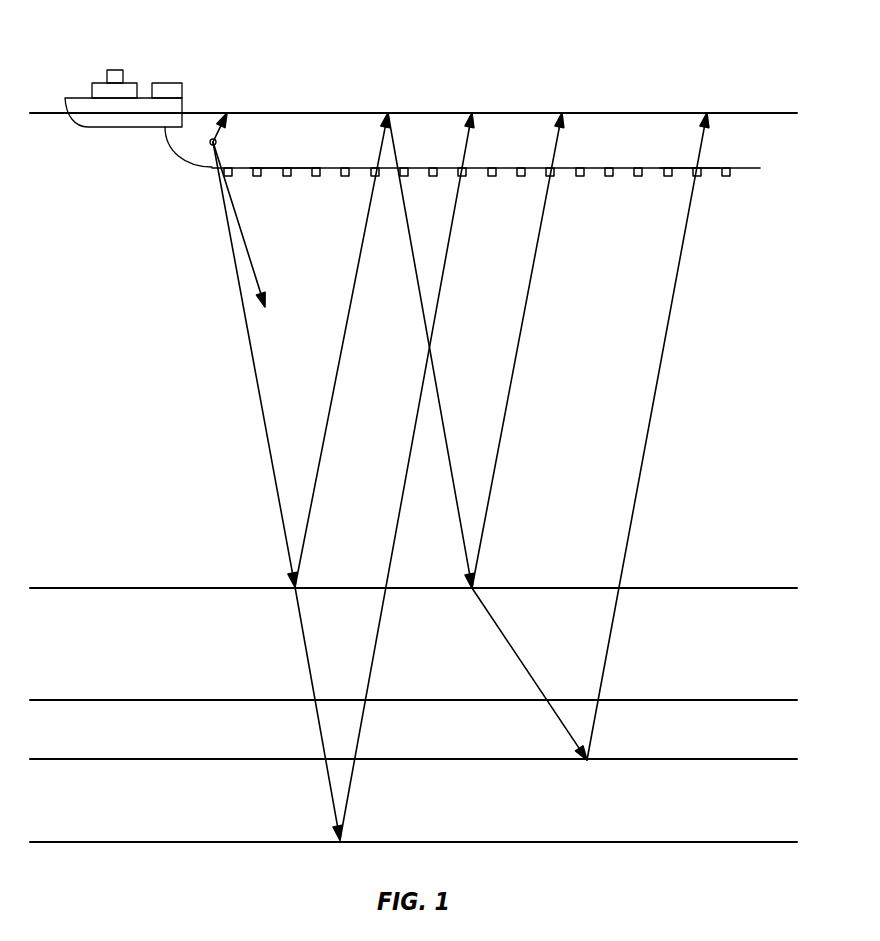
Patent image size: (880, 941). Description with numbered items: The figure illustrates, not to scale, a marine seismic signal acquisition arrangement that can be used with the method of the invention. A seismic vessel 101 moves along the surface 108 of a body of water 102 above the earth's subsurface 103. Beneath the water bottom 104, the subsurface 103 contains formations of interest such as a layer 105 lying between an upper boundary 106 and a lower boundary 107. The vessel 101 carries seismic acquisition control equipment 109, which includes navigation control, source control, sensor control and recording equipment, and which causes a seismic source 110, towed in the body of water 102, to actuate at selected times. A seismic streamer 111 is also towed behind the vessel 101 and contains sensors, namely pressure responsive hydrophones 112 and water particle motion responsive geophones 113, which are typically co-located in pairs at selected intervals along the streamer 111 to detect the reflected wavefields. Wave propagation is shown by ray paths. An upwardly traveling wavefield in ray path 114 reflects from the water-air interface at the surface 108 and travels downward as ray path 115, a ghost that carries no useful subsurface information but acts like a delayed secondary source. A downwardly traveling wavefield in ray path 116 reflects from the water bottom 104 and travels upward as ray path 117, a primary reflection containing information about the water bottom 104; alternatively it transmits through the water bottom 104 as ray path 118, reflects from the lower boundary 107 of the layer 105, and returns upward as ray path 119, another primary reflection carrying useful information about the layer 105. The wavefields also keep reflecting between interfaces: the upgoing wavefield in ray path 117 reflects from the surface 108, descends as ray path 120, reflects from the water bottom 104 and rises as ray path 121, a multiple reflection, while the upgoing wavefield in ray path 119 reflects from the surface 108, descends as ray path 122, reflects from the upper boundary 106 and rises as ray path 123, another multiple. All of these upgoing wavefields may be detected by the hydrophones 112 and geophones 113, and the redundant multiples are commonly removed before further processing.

The seismic vessel 101 is at (115, 69).
The body of water 102 is at (140, 355).
The earth's subsurface 103 is at (160, 660).
The water bottom 104 is at (120, 588).
The layer 105 is at (505, 811).
The upper boundary 106 is at (120, 759).
The lower boundary 107 is at (120, 842).
The surface 108 is at (503, 113).
The seismic acquisition control equipment 109 is at (168, 82).
The seismic source 110 is at (212, 169).
The seismic streamer 111 is at (623, 168).
The hydrophone 112 is at (292, 168).
The geophone 113 is at (318, 168).
The ray path 114 is at (210, 144).
The ray path 115 is at (252, 230).
The ray path 116 is at (268, 448).
The ray path 117 is at (325, 448).
The ray path 118 is at (307, 665).
The ray path 119 is at (373, 665).
The ray path 120 is at (462, 548).
The ray path 121 is at (480, 548).
The ray path 122 is at (567, 663).
The ray path 123 is at (607, 663).